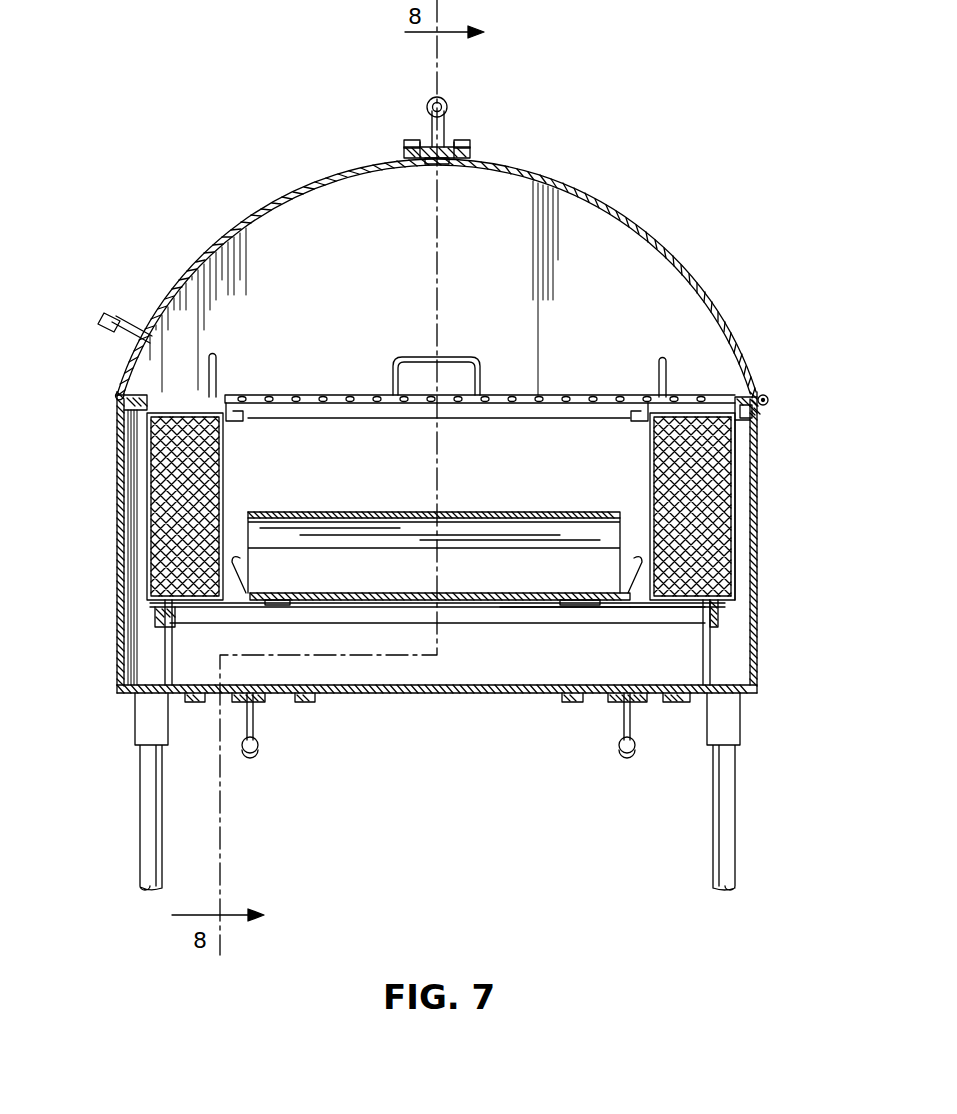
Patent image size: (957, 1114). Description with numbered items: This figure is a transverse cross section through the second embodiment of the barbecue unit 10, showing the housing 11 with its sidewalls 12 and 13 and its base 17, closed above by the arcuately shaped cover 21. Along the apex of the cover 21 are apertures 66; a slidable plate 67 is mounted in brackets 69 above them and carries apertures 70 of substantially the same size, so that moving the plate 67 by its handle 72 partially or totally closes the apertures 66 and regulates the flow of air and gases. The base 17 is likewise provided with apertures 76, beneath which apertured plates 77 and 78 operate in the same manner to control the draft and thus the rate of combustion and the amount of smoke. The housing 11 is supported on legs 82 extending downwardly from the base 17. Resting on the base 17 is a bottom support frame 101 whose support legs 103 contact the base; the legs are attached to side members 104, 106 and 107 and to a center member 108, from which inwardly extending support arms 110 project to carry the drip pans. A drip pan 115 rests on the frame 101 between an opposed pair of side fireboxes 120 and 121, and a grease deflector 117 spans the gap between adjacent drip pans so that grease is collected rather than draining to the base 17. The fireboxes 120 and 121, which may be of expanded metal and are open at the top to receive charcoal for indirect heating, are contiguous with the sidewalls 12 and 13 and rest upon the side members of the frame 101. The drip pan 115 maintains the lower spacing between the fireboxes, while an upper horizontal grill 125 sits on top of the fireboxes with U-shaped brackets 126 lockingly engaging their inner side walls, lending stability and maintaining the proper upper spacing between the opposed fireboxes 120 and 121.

The barbecue unit 10 is at (300, 184).
The housing 11 is at (104, 466).
The sidewall 12 is at (118, 546).
The sidewall 13 is at (757, 490).
The base 17 is at (425, 695).
The cover 21 is at (530, 180).
The apertures 66 is at (440, 166).
The slidable plate 67 is at (428, 148).
The brackets 69 is at (414, 149).
The apertures 70 is at (446, 146).
The handle 72 is at (428, 98).
The apertures 76 is at (290, 696).
The apertured plate 77 is at (258, 705).
The apertured plate 78 is at (616, 706).
The legs 82 is at (140, 840).
The bottom support frame 101 is at (498, 630).
The support legs 103 is at (165, 641).
The side member 104 is at (155, 612).
The side member 106 is at (718, 615).
The side member 107 is at (648, 620).
The center member 108 is at (565, 610).
The support arms 110 is at (278, 608).
The drip pan 115 is at (385, 566).
The grease deflector 117 is at (500, 511).
The side firebox 120 is at (224, 490).
The side firebox 121 is at (648, 496).
The upper horizontal grill 125 is at (343, 396).
The U-shaped brackets 126 is at (240, 422).